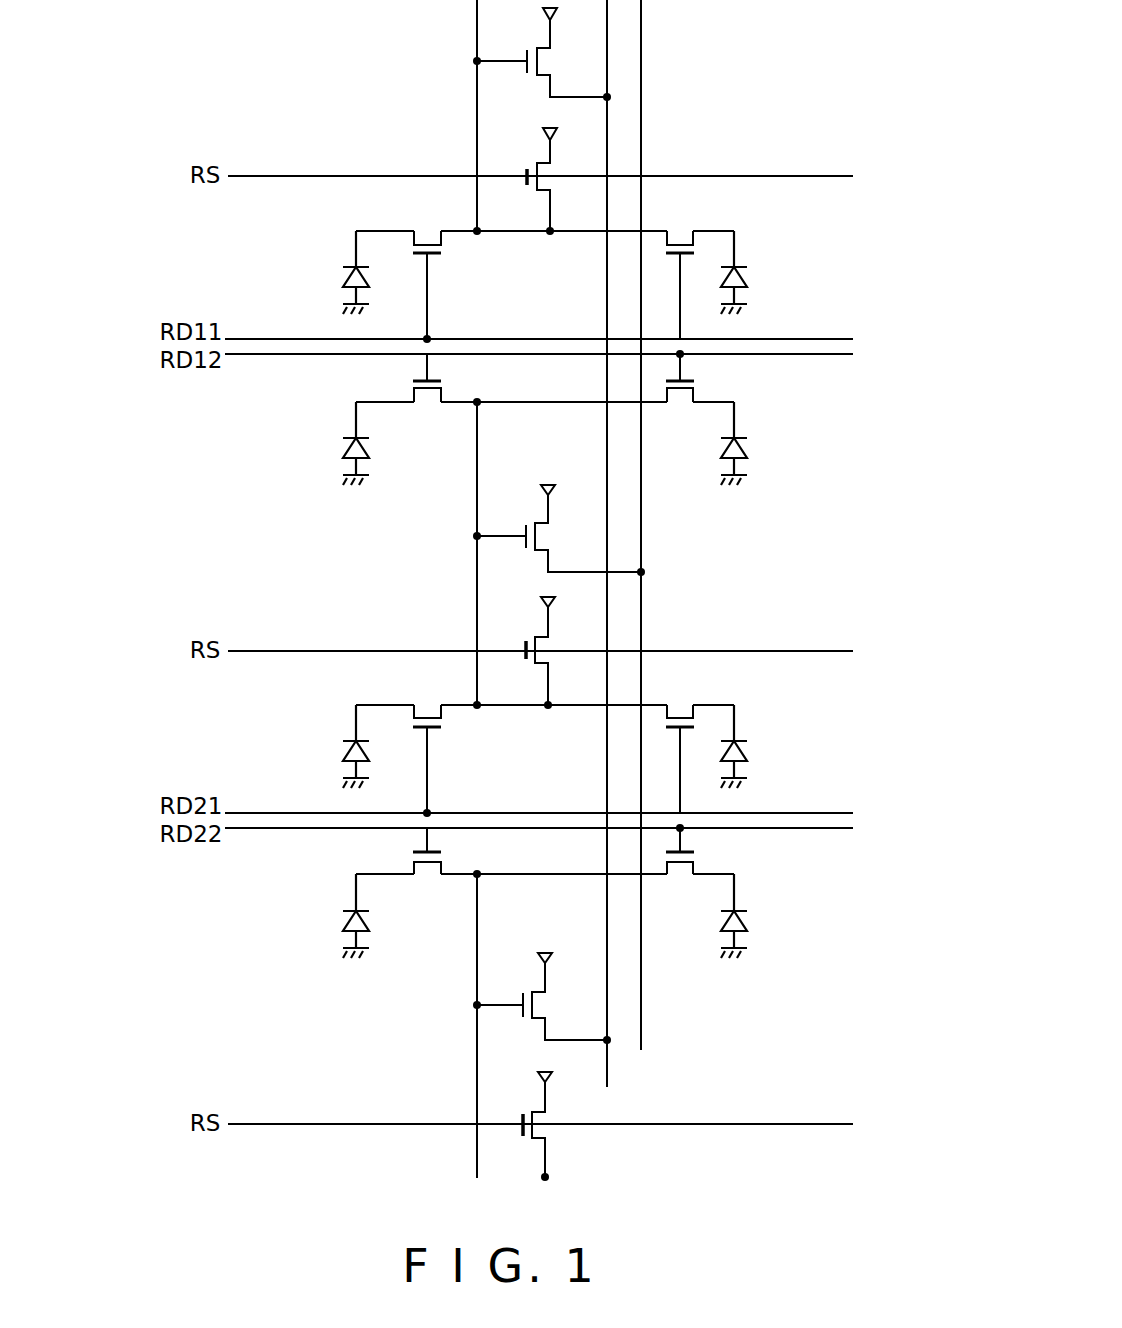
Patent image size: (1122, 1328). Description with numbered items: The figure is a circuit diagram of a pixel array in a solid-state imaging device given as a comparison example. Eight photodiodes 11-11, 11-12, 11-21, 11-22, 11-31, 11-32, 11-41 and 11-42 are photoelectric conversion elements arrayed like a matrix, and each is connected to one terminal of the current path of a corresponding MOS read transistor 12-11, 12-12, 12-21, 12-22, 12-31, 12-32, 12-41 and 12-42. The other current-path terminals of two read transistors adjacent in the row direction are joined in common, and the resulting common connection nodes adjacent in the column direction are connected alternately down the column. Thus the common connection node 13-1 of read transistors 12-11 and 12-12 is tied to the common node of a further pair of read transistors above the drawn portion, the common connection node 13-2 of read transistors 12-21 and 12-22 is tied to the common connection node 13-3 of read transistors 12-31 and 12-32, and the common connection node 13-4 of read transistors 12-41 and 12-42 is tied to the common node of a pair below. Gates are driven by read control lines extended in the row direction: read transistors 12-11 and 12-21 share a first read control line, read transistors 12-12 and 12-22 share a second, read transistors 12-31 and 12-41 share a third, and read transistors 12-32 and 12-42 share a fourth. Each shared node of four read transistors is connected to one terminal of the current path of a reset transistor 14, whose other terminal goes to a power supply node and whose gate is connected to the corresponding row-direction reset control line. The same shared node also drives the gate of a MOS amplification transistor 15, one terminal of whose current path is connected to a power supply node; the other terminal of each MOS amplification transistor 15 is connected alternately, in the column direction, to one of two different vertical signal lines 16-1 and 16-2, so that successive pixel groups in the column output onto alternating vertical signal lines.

The photodiode 11-11 is at (343, 271).
The photodiode 11-12 is at (747, 271).
The photodiode 11-21 is at (343, 442).
The photodiode 11-22 is at (747, 442).
The photodiode 11-31 is at (343, 746).
The photodiode 11-32 is at (747, 746).
The photodiode 11-41 is at (343, 914).
The photodiode 11-42 is at (747, 915).
The MOS read transistor 12-11 is at (427, 230).
The MOS read transistor 12-12 is at (681, 230).
The MOS read transistor 12-21 is at (428, 398).
The MOS read transistor 12-22 is at (680, 398).
The MOS read transistor 12-31 is at (427, 704).
The MOS read transistor 12-32 is at (681, 704).
The MOS read transistor 12-41 is at (427, 870).
The MOS read transistor 12-42 is at (680, 870).
The common connection node 13-1 is at (479, 233).
The common connection node 13-2 is at (479, 402).
The common connection node 13-3 is at (479, 707).
The common connection node 13-4 is at (479, 874).
The reset transistor 14 is at (548, 172).
The MOS amplification transistor 15 is at (548, 58).
The vertical signal line 16-1 is at (609, 545).
The vertical signal line 16-2 is at (643, 598).